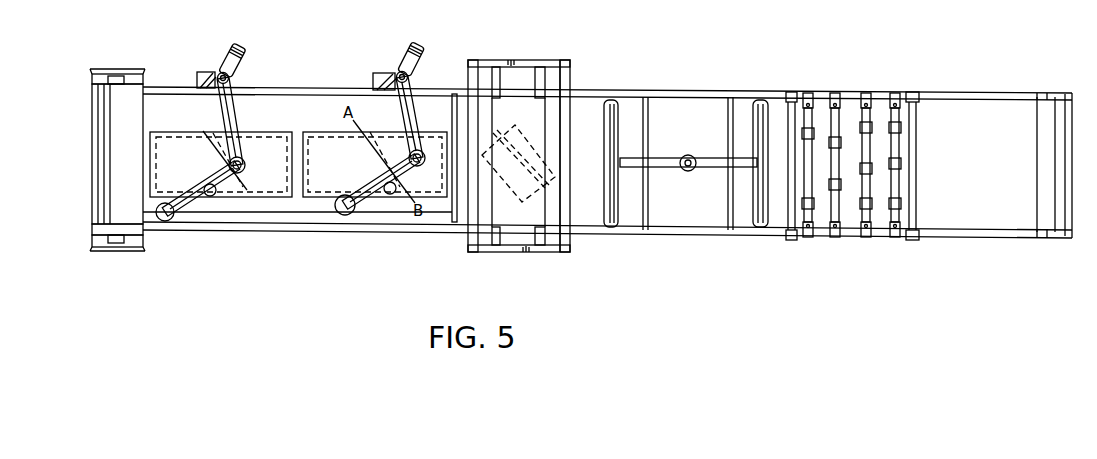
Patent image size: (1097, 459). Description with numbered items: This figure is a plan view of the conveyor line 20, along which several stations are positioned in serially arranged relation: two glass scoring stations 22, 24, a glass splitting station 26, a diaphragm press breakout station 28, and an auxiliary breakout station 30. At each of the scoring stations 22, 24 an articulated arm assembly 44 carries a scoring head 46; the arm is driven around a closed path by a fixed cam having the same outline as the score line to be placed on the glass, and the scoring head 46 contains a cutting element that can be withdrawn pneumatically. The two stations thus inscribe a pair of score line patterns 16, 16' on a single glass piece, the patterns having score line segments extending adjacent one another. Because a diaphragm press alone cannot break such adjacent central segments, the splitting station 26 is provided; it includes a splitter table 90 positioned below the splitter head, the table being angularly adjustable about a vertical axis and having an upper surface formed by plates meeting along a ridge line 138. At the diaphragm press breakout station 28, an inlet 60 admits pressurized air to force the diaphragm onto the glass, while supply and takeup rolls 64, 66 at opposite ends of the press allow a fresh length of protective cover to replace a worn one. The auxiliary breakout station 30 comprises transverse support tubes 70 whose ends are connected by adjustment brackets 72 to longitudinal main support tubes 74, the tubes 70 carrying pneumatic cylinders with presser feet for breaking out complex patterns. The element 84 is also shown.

The score line pattern 16 is at (221, 150).
The score line pattern 16' is at (375, 150).
The conveyor line 20 is at (258, 248).
The glass scoring station 22 is at (265, 80).
The glass scoring station 24 is at (389, 61).
The glass splitting station 26 is at (575, 58).
The diaphragm press breakout station 28 is at (670, 82).
The auxiliary breakout station 30 is at (900, 78).
The articulated arm assembly 44 is at (243, 118).
The scoring head 46 is at (207, 182).
The inlet for pressurized air 60 is at (690, 155).
The supply roll 64 is at (615, 221).
The takeup roll 66 is at (745, 223).
The support tube 70 is at (868, 192).
The adjustment bracket 72 is at (808, 92).
The main support tube 74 is at (856, 92).
The gate post 84 is at (553, 251).
The splitter table 90 is at (557, 190).
The ridge line 138 is at (523, 163).